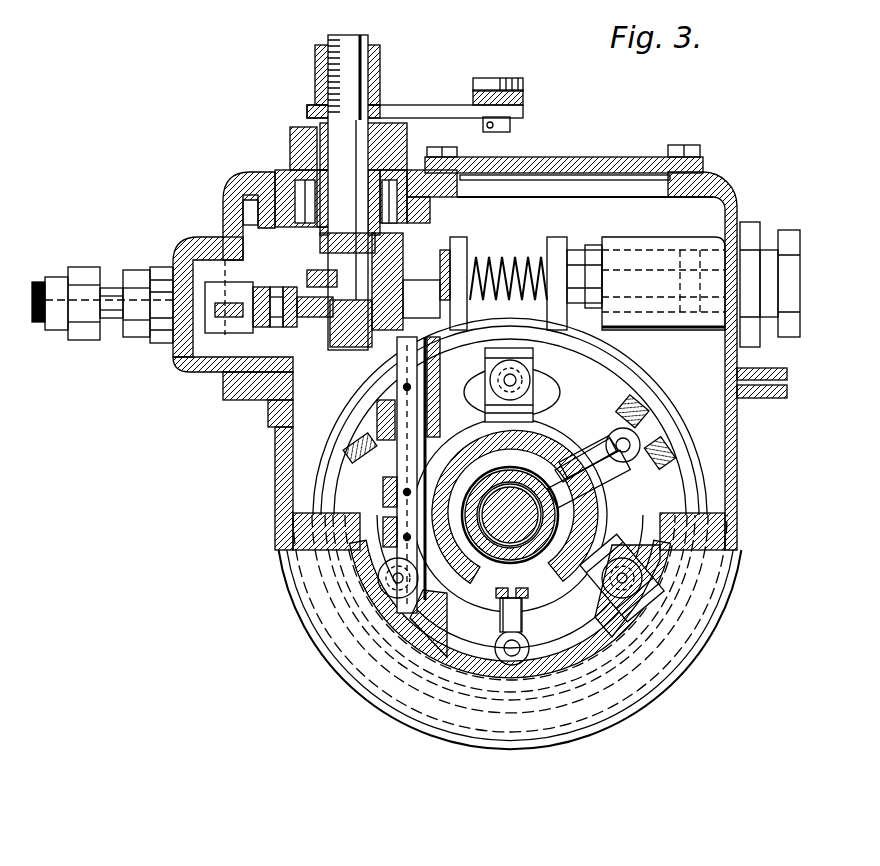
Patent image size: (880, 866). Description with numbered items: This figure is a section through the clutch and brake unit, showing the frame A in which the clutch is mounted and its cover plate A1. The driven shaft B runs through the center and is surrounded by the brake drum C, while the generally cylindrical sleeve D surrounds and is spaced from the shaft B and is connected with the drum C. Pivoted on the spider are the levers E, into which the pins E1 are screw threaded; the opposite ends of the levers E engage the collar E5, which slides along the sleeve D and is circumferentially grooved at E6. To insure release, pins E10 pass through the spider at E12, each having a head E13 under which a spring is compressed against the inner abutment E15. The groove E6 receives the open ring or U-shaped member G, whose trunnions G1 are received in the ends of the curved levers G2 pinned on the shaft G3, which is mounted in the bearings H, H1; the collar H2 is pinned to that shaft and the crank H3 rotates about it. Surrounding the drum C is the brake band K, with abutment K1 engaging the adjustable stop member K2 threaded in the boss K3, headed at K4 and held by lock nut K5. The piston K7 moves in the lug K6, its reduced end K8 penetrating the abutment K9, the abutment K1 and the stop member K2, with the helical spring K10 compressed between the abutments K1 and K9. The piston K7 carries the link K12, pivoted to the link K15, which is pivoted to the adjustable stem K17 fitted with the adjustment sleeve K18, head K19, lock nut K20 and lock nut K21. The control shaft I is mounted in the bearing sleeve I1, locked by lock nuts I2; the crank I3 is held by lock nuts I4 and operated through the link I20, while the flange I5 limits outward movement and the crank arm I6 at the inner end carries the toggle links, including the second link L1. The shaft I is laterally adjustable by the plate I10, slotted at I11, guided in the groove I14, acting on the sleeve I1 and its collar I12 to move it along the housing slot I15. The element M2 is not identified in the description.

The frame A is at (283, 578).
The cover plate A1 is at (222, 208).
The driven shaft B is at (553, 498).
The brake drum C is at (686, 476).
The sleeve D is at (588, 432).
The levers E is at (345, 478).
The pins E1 is at (345, 470).
The collar E5 is at (600, 552).
The circumferential groove E6 is at (572, 511).
The pins E10 is at (628, 584).
The passage through member D3 E12 is at (396, 596).
The head E13 is at (600, 586).
The inner abutment E15 is at (510, 352).
The open ring or U-shaped member G is at (475, 593).
The pins or trunnions G1 is at (552, 440).
The curved levers G2 is at (463, 438).
The shaft G3 is at (397, 600).
The bearing H is at (392, 626).
The bearing H1 is at (283, 415).
The collar H2 is at (345, 393).
The crank H3 is at (392, 355).
The control shaft I is at (392, 150).
The bearing sleeve I1 is at (425, 162).
The lock nuts I2 is at (322, 162).
The crank or handle I3 is at (526, 114).
The lock nuts I4 is at (372, 95).
The flange I5 is at (320, 246).
The crank arm I6 is at (325, 340).
The plate I10 is at (292, 172).
The inclined slot I11 is at (310, 172).
The collar or flange I12 is at (233, 238).
The groove I14 is at (268, 180).
The slot I15 is at (250, 193).
The link I20 is at (526, 95).
The brake band K is at (700, 428).
The abutment member K1 is at (572, 250).
The adjustable stop member K2 is at (590, 253).
The boss K3 is at (653, 244).
The head K4 is at (786, 236).
The lock nut K5 is at (745, 228).
The lug K6 is at (398, 242).
The piston K7 is at (452, 246).
The reduced end K8 is at (505, 262).
The brake band abutment K9 is at (465, 242).
The helical spring K10 is at (552, 250).
The link K12 is at (300, 288).
The link K15 is at (248, 312).
The adjustable stem K17 is at (58, 285).
The screw threaded adjustment sleeve K18 is at (124, 285).
The head K19 is at (100, 288).
The lock nut K20 is at (155, 288).
The lock nut K21 is at (88, 280).
The second link L1 is at (245, 362).
The flange M2 is at (282, 397).